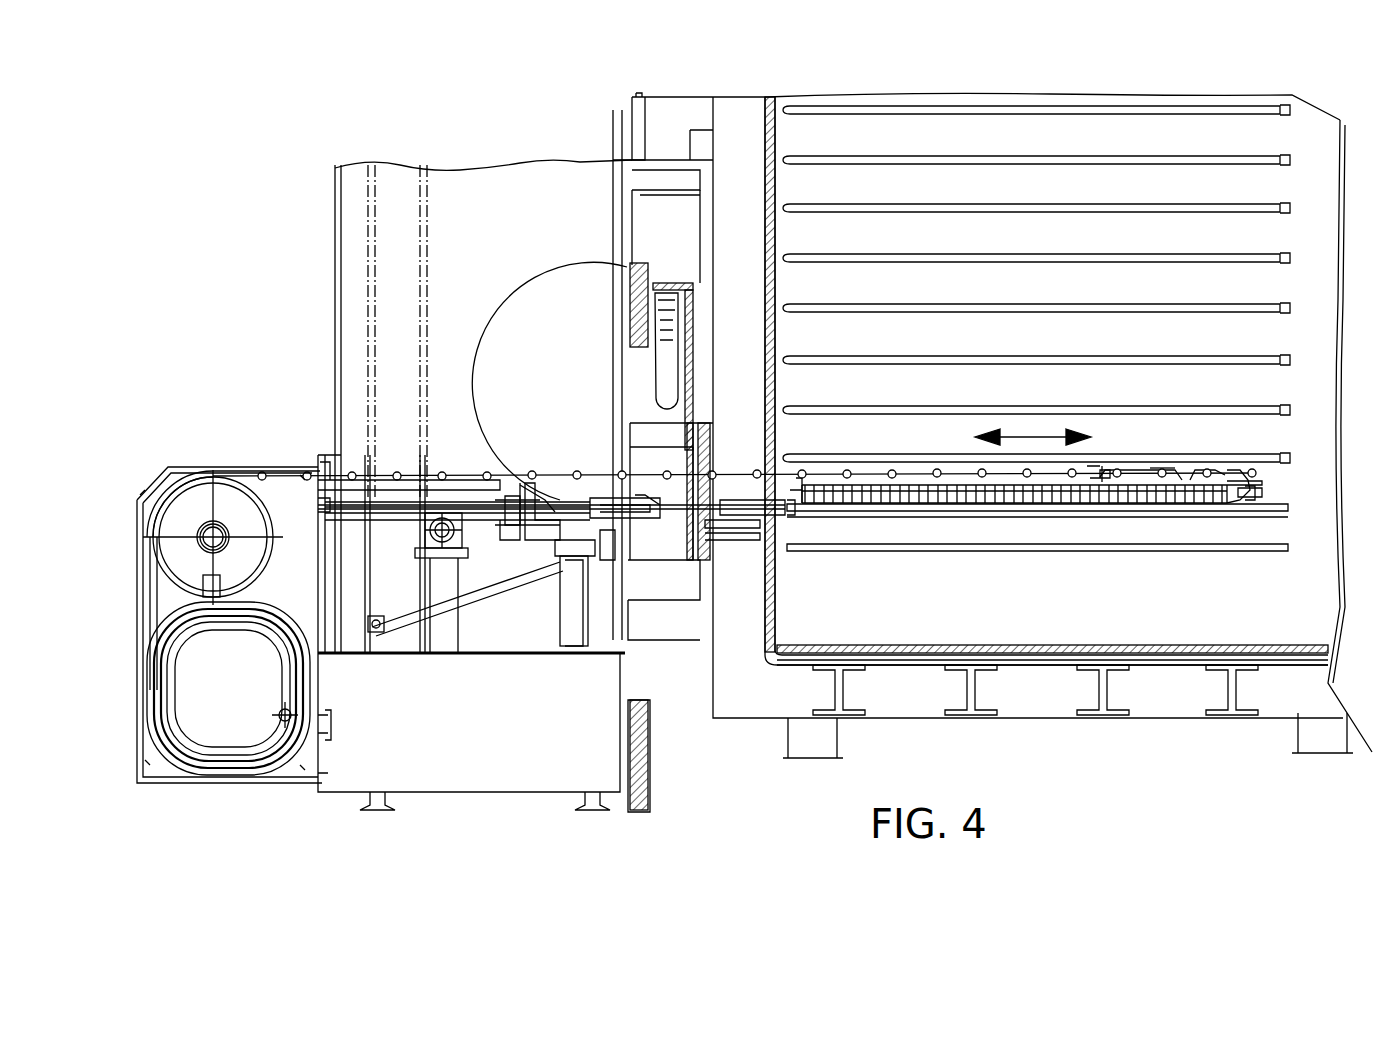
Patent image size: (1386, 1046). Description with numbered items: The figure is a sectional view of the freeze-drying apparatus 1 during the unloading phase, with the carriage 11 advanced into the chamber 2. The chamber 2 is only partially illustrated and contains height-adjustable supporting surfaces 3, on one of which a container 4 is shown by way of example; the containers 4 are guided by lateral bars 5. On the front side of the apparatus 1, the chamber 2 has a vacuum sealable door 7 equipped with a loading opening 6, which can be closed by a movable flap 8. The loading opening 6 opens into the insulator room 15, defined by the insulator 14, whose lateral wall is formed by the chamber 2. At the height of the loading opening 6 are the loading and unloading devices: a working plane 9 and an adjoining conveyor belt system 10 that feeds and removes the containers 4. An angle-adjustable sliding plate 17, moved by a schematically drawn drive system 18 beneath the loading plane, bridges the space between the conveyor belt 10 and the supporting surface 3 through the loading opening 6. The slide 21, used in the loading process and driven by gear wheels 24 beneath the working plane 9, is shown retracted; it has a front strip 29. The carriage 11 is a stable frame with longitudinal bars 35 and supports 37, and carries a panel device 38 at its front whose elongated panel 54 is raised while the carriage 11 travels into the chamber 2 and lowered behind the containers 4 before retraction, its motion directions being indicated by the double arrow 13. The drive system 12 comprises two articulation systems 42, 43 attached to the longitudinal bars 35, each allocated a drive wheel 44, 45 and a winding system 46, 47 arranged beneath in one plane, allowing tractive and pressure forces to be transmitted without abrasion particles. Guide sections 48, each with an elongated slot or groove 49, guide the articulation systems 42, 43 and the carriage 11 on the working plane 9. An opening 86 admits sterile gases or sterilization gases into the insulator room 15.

The freeze-drying apparatus 1 is at (608, 130).
The chamber 2 is at (903, 615).
The supporting surfaces 3 is at (1290, 259).
The container 4 is at (863, 500).
The lateral bars 5 is at (1290, 361).
The loading opening 6 is at (737, 458).
The vacuum sealable door 7 is at (738, 108).
The movable flap 8 is at (630, 303).
The working plane 9 is at (385, 521).
The conveyor belt system 10 is at (522, 544).
The carriage 11 is at (1162, 462).
The drive system 12 is at (157, 478).
The double arrow 13 is at (1037, 430).
The insulator 14 is at (334, 293).
The insulator room 15 is at (459, 235).
The sliding plate 17 is at (754, 508).
The drive system 18 is at (545, 597).
The slide 21 is at (356, 476).
The gear wheels 24 is at (434, 543).
The front strip 29 is at (534, 448).
The longitudinal bars 35 is at (1183, 476).
The supports 37 is at (1177, 494).
The panel device 38 is at (1268, 487).
The articulation system 42 is at (292, 478).
The articulation system 43 is at (233, 580).
The drive wheel 44 is at (258, 566).
The drive wheel 45 is at (213, 537).
The winding system 46 is at (213, 737).
The winding system 47 is at (228, 688).
The guide sections 48 is at (456, 478).
The elongated slot or groove 49 is at (410, 478).
The panel 54 is at (1232, 497).
The opening 86 is at (282, 712).